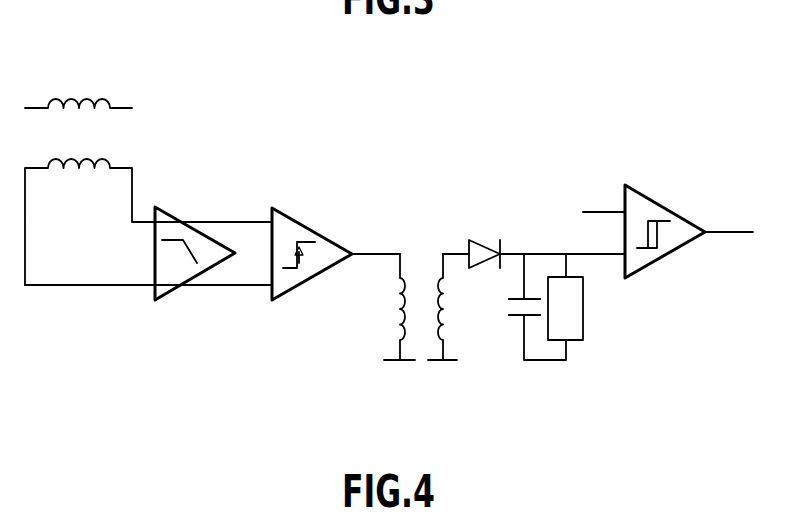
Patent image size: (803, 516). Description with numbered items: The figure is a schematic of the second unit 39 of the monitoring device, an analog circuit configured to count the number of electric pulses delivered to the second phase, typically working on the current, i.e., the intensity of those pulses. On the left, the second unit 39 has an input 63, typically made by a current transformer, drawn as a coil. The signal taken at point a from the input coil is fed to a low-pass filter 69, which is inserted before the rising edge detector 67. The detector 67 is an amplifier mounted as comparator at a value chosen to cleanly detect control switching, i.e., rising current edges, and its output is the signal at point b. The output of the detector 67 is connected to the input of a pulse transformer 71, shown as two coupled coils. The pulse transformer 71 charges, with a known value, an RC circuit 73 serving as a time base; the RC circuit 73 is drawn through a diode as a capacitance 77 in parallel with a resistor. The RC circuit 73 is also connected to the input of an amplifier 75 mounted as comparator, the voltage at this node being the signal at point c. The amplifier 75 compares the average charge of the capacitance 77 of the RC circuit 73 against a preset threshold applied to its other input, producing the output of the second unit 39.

The second unit 39 is at (556, 140).
The input 63 is at (74, 72).
The low-pass filter 69 is at (173, 292).
The rising edge detector 67 is at (291, 296).
The pulse transformer 71 is at (423, 372).
The RC circuit 73 is at (545, 372).
The capacitance 77 is at (517, 318).
The amplifier 75 is at (655, 198).
The point a is at (75, 286).
The point b is at (380, 253).
The point c is at (546, 253).